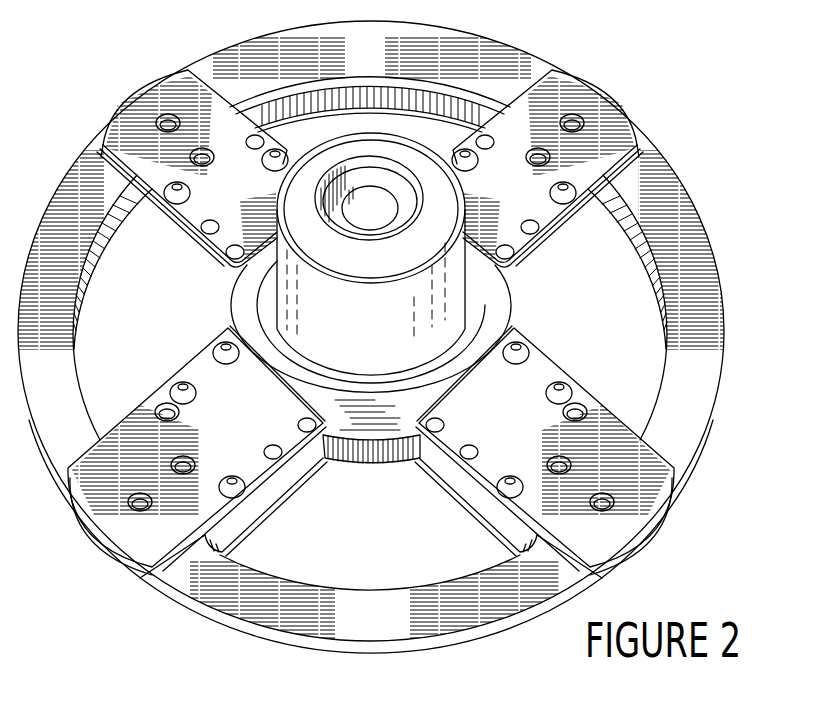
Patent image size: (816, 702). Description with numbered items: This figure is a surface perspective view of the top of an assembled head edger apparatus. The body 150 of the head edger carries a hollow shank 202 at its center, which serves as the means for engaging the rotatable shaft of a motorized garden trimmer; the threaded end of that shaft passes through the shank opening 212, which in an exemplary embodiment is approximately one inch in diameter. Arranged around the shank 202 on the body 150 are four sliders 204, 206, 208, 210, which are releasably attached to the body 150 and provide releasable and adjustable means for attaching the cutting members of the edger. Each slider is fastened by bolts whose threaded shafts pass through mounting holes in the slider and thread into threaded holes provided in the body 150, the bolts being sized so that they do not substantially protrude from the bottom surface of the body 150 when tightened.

The body 150 is at (695, 287).
The hollow shank 202 is at (389, 336).
The slider 204 is at (653, 506).
The slider 206 is at (615, 130).
The slider 208 is at (123, 133).
The slider 210 is at (135, 543).
The shank opening 212 is at (377, 213).